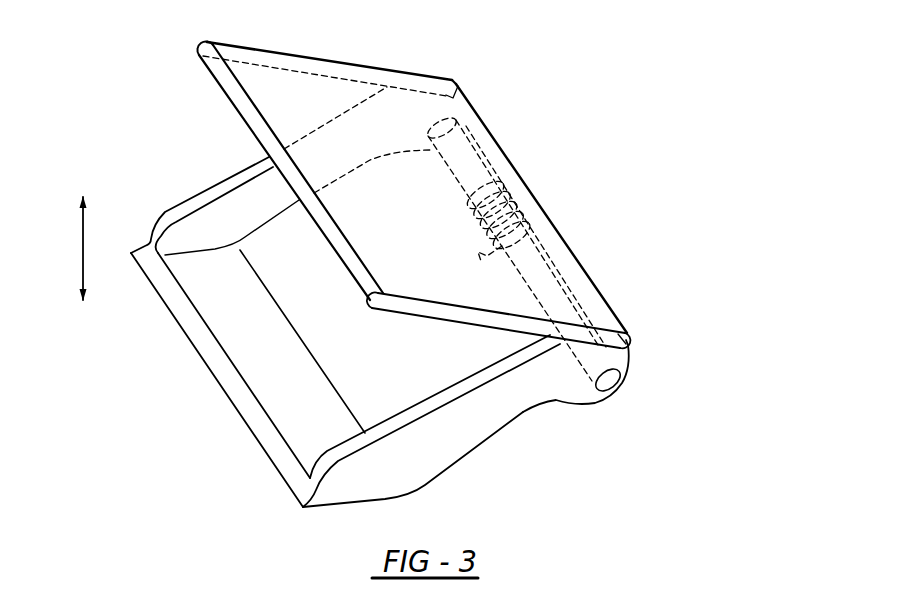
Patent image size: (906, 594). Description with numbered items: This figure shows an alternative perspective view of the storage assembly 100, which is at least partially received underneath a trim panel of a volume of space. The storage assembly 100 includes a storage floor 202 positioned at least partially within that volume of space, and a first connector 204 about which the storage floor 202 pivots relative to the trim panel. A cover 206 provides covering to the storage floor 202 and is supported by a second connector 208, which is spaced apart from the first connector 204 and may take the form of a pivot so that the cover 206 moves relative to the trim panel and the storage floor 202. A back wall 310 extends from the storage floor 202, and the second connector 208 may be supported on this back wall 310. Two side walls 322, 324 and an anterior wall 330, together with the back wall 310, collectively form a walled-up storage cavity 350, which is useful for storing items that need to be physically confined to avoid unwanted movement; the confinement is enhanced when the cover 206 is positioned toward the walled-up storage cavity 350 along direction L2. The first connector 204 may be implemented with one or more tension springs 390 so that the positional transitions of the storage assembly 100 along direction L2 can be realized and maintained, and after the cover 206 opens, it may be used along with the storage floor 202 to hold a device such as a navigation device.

The storage assembly 100 is at (187, 467).
The storage floor 202 is at (443, 373).
The first connector 204 is at (608, 380).
The cover 206 is at (310, 75).
The second connector 208 is at (630, 338).
The back wall 310 is at (640, 353).
The side wall 322 is at (510, 412).
The side wall 324 is at (167, 207).
The anterior wall 330 is at (223, 393).
The walled-up storage cavity 350 is at (402, 366).
The tension spring 390 is at (507, 195).
The direction L2 is at (68, 248).